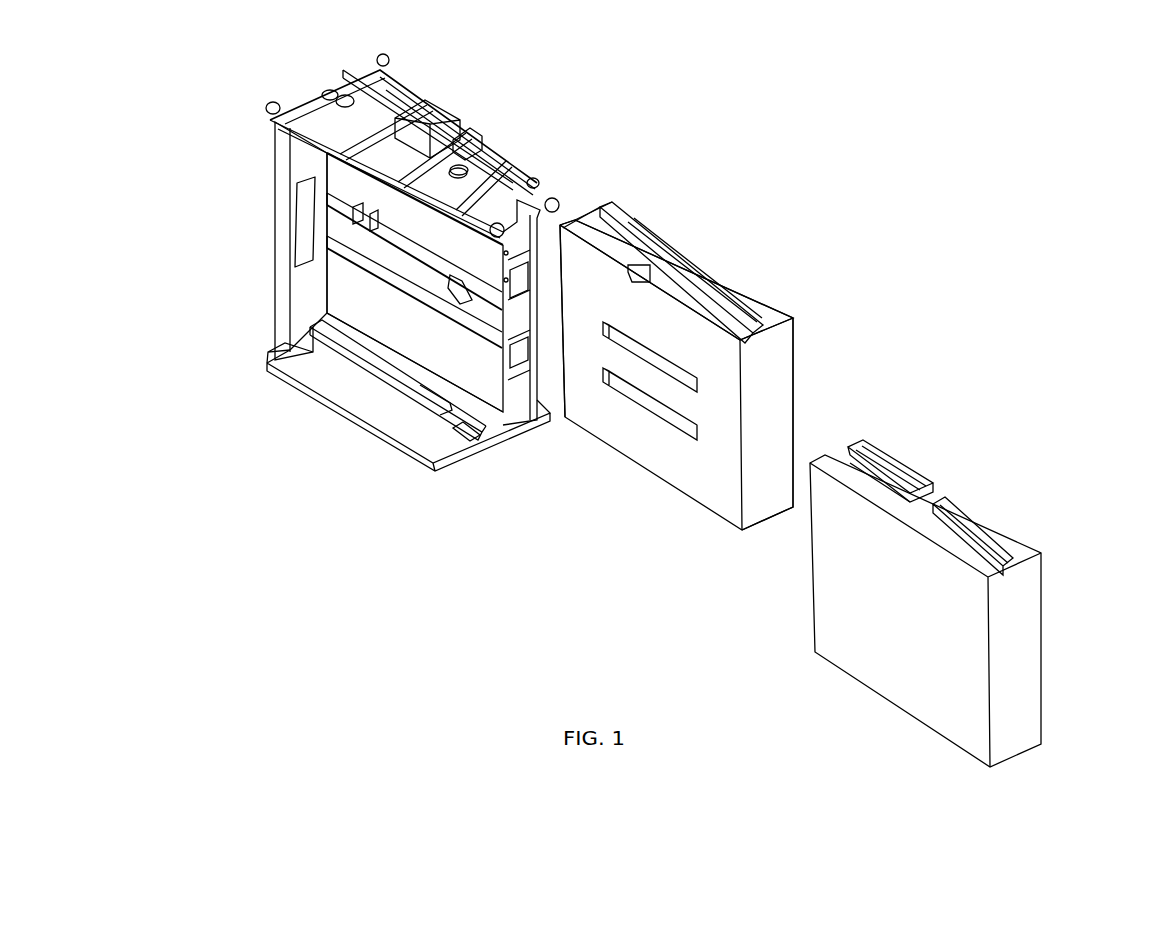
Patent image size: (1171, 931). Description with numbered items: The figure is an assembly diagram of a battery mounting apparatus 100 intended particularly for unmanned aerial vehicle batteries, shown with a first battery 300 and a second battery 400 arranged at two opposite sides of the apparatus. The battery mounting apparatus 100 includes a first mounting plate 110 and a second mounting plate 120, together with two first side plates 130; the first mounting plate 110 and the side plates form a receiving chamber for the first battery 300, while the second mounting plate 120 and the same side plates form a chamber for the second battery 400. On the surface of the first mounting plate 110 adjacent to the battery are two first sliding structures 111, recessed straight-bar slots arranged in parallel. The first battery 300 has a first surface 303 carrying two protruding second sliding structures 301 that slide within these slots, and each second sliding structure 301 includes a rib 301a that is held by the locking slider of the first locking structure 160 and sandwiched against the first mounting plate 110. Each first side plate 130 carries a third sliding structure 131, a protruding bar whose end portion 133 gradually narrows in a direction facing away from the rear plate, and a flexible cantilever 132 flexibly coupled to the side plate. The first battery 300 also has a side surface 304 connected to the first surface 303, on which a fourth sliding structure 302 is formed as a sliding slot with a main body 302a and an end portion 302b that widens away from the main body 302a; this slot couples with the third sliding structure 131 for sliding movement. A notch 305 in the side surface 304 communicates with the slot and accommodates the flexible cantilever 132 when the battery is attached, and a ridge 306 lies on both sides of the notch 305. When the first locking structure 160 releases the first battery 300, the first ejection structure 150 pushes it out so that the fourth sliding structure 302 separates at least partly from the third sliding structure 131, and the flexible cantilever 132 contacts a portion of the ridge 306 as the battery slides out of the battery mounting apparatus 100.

The battery mounting apparatus 100 is at (405, 265).
The first mounting plate 110 is at (268, 363).
The first sliding structure 111 is at (322, 270).
The second mounting plate 120 is at (537, 233).
The first side plate 130 is at (305, 120).
The third sliding structure 131 is at (400, 327).
The flexible cantilever 132 is at (427, 390).
The end portion 133 is at (467, 432).
The first ejection structure 150 is at (353, 215).
The first locking structure 160 is at (457, 287).
The first battery 300 is at (1017, 620).
The second sliding structure 301 is at (680, 430).
The rib 301a is at (693, 387).
The fourth sliding structure 302 is at (826, 351).
The main body 302a is at (715, 315).
The end portion 302b is at (615, 218).
The first surface 303 is at (715, 483).
The side surface 304 is at (593, 217).
The notch 305 is at (572, 417).
The ridge 306 is at (750, 292).
The second battery 400 is at (847, 430).